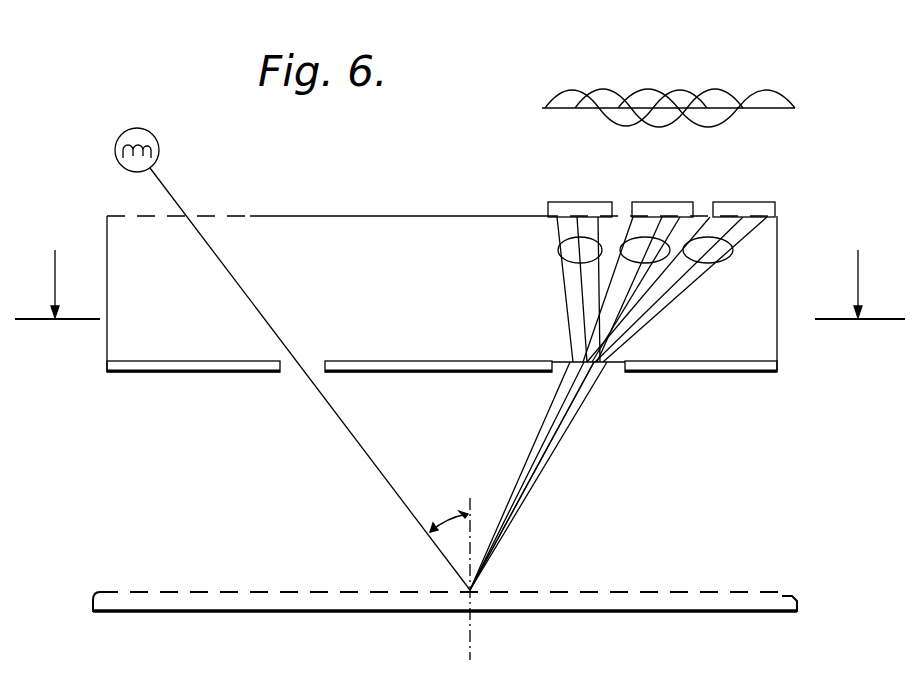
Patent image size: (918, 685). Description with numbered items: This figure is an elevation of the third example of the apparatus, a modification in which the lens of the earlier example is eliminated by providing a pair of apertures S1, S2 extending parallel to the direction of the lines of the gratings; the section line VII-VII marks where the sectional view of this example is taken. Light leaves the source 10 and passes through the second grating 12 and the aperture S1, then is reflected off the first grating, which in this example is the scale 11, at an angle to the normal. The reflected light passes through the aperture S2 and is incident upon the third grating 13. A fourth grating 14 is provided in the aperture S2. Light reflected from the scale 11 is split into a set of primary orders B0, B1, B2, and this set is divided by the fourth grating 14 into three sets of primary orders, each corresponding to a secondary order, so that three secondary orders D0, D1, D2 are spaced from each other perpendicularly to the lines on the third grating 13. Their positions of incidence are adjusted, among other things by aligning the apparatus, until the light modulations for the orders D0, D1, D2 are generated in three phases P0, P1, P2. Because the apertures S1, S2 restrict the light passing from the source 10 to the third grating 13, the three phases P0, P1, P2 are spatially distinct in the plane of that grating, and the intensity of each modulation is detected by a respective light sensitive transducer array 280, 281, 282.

The source 10 is at (152, 130).
The first grating (scale) 11 is at (790, 593).
The second grating 12 is at (250, 216).
The third grating 13 is at (538, 216).
The fourth grating 14 is at (614, 374).
The light sensitive transducer array 280 is at (598, 202).
The light sensitive transducer array 281 is at (680, 202).
The light sensitive transducer array 282 is at (758, 202).
The phase P0 is at (568, 93).
The phase P1 is at (595, 95).
The phase P2 is at (648, 98).
The secondary order D0 is at (668, 253).
The secondary order D1 is at (733, 256).
The secondary order D2 is at (558, 250).
The aperture S1 is at (281, 369).
The aperture S2 is at (553, 370).
The primary order B0 is at (523, 500).
The primary order B1 is at (552, 469).
The primary order B2 is at (512, 532).
The section line VII- VII is at (460, 272).